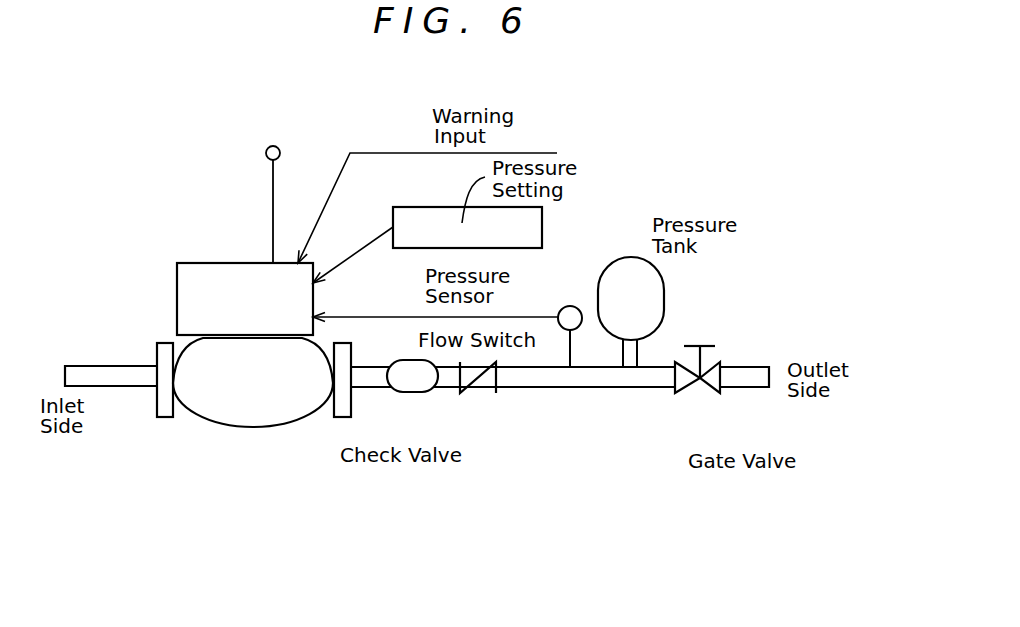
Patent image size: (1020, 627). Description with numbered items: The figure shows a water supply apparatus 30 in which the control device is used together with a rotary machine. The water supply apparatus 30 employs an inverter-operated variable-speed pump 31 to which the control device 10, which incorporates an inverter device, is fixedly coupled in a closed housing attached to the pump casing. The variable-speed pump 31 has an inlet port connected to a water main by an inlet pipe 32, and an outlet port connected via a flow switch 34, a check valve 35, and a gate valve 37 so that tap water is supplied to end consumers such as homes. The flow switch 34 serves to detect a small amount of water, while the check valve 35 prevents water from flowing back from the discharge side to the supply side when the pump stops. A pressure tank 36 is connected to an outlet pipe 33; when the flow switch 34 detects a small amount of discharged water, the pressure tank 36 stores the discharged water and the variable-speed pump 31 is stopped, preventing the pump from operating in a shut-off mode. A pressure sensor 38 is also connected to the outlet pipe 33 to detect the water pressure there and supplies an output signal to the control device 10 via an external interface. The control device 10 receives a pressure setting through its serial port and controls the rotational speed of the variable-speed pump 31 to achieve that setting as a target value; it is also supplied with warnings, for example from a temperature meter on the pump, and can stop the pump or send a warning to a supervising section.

The control device 10 is at (204, 262).
The water supply apparatus 30 is at (616, 196).
The variable-speed pump 31 is at (214, 422).
The inlet pipe 32 is at (102, 364).
The outlet pipe 33 is at (747, 365).
The flow switch 34 is at (389, 362).
The check valve 35 is at (497, 396).
The pressure tank 36 is at (620, 256).
The gate valve 37 is at (683, 392).
The pressure sensor 38 is at (568, 306).